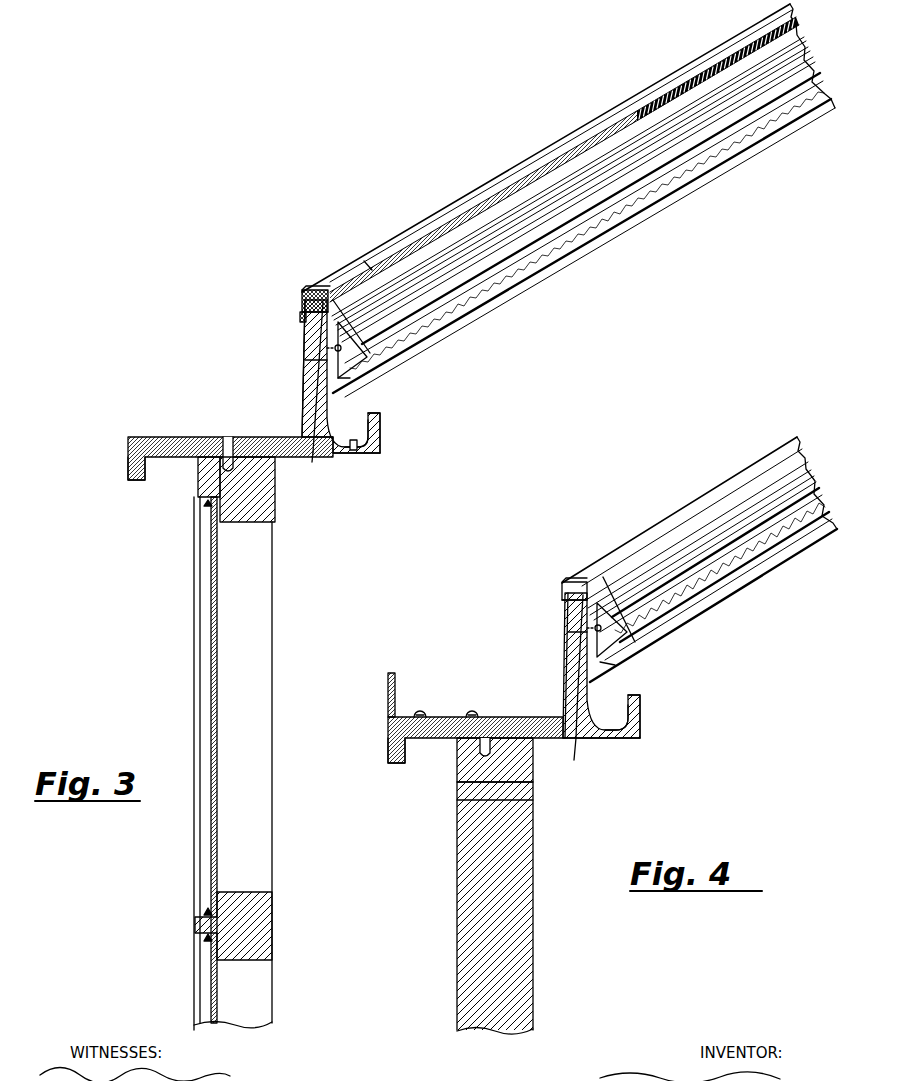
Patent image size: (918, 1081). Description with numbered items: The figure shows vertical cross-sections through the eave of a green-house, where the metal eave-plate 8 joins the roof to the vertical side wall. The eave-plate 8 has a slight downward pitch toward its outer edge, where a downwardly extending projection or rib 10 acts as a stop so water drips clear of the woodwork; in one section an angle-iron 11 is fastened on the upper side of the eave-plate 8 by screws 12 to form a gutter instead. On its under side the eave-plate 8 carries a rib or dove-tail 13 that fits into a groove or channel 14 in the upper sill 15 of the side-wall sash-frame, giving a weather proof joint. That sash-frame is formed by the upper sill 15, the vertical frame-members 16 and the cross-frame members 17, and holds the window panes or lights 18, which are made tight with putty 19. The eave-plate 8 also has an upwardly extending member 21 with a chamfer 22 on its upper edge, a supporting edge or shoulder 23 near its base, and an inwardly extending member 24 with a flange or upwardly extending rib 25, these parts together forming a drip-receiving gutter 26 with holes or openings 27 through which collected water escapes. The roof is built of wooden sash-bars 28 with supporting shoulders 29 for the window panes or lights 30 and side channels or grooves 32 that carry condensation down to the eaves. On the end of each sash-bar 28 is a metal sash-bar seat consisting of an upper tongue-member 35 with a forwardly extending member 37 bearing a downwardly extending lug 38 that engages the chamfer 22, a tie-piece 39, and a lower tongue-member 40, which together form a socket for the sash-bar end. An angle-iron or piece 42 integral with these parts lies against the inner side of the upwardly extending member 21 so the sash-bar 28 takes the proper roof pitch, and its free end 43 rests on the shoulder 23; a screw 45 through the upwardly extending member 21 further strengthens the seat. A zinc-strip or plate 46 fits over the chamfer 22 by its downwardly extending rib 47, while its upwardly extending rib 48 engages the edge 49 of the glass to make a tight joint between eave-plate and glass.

In FIG. 3, the eave-plate 8 is at (183, 441).
In FIG. 4, the eave-plate 8 is at (528, 716).
In FIG. 3, the downwardly extending projection or rib 10 is at (130, 476).
In FIG. 4, the downwardly extending projection or rib 10 is at (388, 751).
In FIG. 4, the angle-iron 11 is at (387, 690).
In FIG. 4, the screws 12 is at (472, 712).
In FIG. 3, the rib or dove-tail 13 is at (228, 441).
In FIG. 4, the rib or dove-tail 13 is at (460, 778).
In FIG. 3, the groove or channel 14 is at (227, 467).
In FIG. 4, the groove or channel 14 is at (480, 748).
In FIG. 3, the upper sill 15 is at (277, 512).
In FIG. 4, the upper sill 15 is at (530, 771).
In FIG. 3, the vertical frame-members 16 is at (268, 635).
In FIG. 4, the vertical frame-members 16 is at (522, 864).
In FIG. 3, the cross-frame members 17 is at (260, 932).
In FIG. 3, the window panes or lights 18 is at (212, 828).
In FIG. 3, the putty 19 is at (210, 502).
In FIG. 3, the upwardly extending member 21 is at (312, 385).
In FIG. 4, the upwardly extending member 21 is at (583, 640).
In FIG. 3, the chamfer 22 is at (305, 340).
In FIG. 4, the chamfer 22 is at (568, 600).
In FIG. 3, the supporting edge or shoulder 23 is at (314, 455).
In FIG. 4, the supporting edge or shoulder 23 is at (600, 672).
In FIG. 3, the inwardly extending member 24 is at (375, 456).
In FIG. 4, the inwardly extending member 24 is at (628, 739).
In FIG. 3, the flange or upwardly extending rib 25 is at (383, 427).
In FIG. 4, the flange or upwardly extending rib 25 is at (643, 714).
In FIG. 3, the drip-receiving gutter 26 is at (357, 427).
In FIG. 4, the drip-receiving gutter 26 is at (612, 710).
In FIG. 3, the holes or openings 27 is at (355, 455).
In FIG. 3, the sash-bars 28 is at (557, 220).
In FIG. 4, the sash-bars 28 is at (692, 503).
In FIG. 3, the supporting shoulders 29 is at (572, 172).
In FIG. 4, the supporting shoulders 29 is at (760, 488).
In FIG. 3, the window panes or lights 30 is at (520, 185).
In FIG. 3, the side channels or grooves 32 is at (447, 262).
In FIG. 4, the side channels or grooves 32 is at (690, 580).
In FIG. 3, the upper tongue-member 35 is at (398, 241).
In FIG. 4, the upper tongue-member 35 is at (645, 529).
In FIG. 3, the forwardly extending member 37 is at (306, 293).
In FIG. 4, the forwardly extending member 37 is at (572, 580).
In FIG. 3, the downwardly extending lug 38 is at (302, 303).
In FIG. 4, the downwardly extending lug 38 is at (562, 589).
In FIG. 3, the tie-piece 39 is at (356, 330).
In FIG. 4, the tie-piece 39 is at (613, 607).
In FIG. 3, the lower tongue-member 40 is at (405, 353).
In FIG. 4, the lower tongue-member 40 is at (672, 626).
In FIG. 3, the angle-iron or piece 42 is at (305, 360).
In FIG. 4, the angle-iron or piece 42 is at (568, 632).
In FIG. 3, the free end 43 is at (307, 392).
In FIG. 4, the free end 43 is at (584, 665).
In FIG. 3, the screw 45 is at (372, 352).
In FIG. 4, the screw 45 is at (637, 655).
In FIG. 3, the zinc-strip or plate 46 is at (303, 318).
In FIG. 3, the downwardly extending rib 47 is at (370, 267).
In FIG. 3, the upwardly extending rib 48 is at (303, 293).
In FIG. 3, the edge of the glass 49 is at (325, 291).